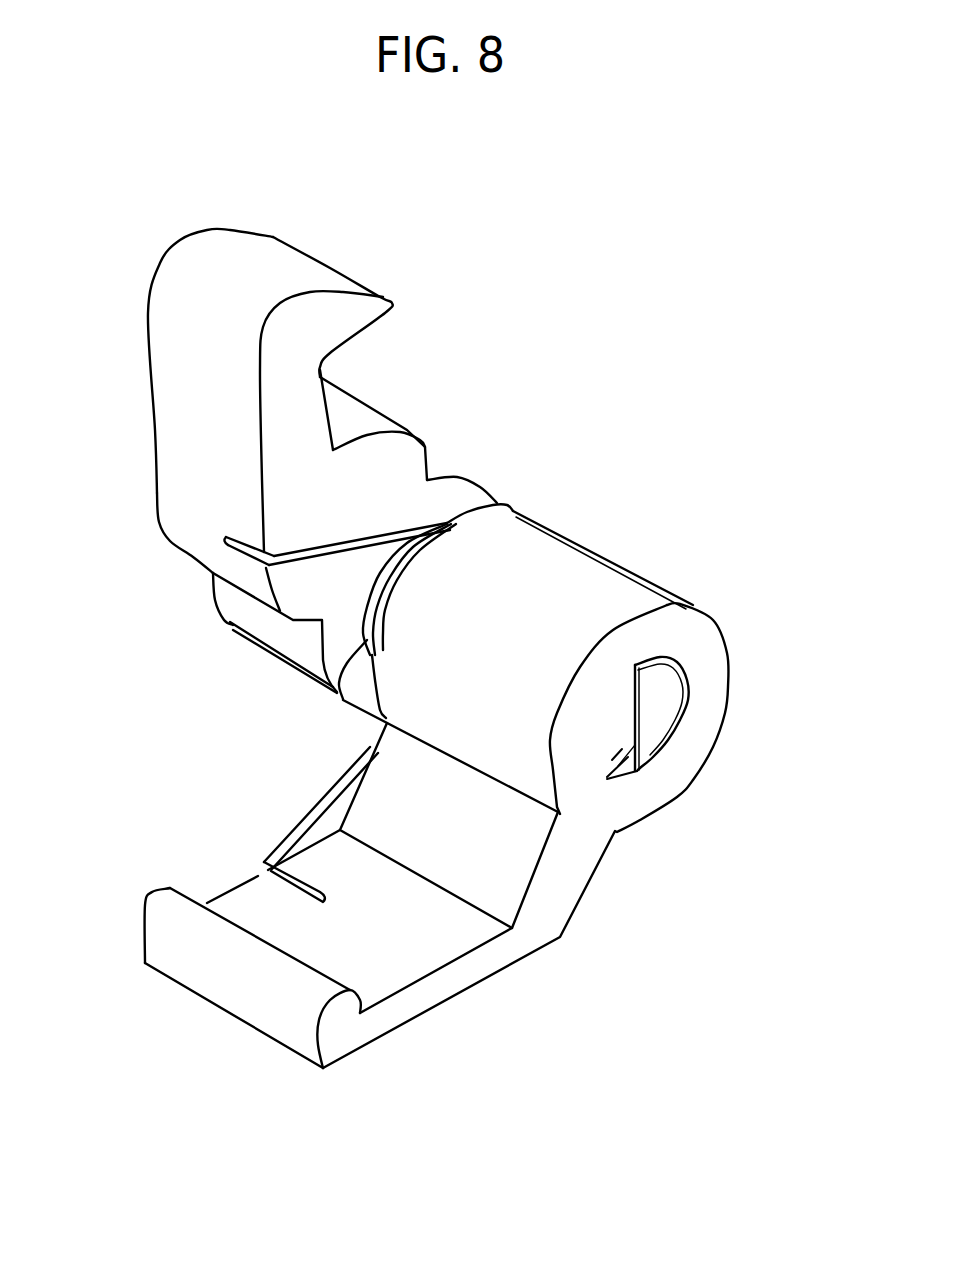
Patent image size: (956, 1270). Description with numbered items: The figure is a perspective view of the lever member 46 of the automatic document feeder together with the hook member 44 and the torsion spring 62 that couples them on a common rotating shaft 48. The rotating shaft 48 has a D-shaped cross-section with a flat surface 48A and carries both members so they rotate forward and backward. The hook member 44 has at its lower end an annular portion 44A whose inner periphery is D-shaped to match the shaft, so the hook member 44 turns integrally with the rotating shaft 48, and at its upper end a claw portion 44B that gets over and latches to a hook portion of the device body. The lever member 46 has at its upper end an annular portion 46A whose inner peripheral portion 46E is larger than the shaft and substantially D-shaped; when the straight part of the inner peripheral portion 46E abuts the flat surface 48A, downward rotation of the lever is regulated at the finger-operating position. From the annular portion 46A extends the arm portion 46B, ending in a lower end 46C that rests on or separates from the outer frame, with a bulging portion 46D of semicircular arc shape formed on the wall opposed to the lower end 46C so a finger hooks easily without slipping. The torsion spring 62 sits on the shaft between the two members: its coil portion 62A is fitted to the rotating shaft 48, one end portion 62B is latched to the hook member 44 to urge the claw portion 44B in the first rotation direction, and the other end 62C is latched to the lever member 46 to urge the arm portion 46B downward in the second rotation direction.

The hook member 44 is at (187, 270).
The annular portion 44A is at (437, 467).
The claw portion 44B is at (318, 262).
The lever member 46 is at (664, 802).
The annular portion 46A is at (603, 577).
The arm portion 46B is at (483, 967).
The lower end 46C is at (237, 1023).
The bulging portion 46D is at (247, 947).
The inner peripheral portion 46E is at (630, 781).
The rotating shaft 48 is at (667, 693).
The flat surface 48A is at (647, 763).
The torsion spring 62 is at (372, 585).
The coil portion 62A is at (337, 700).
The one end portion 62B is at (241, 537).
The other end 62C is at (330, 887).